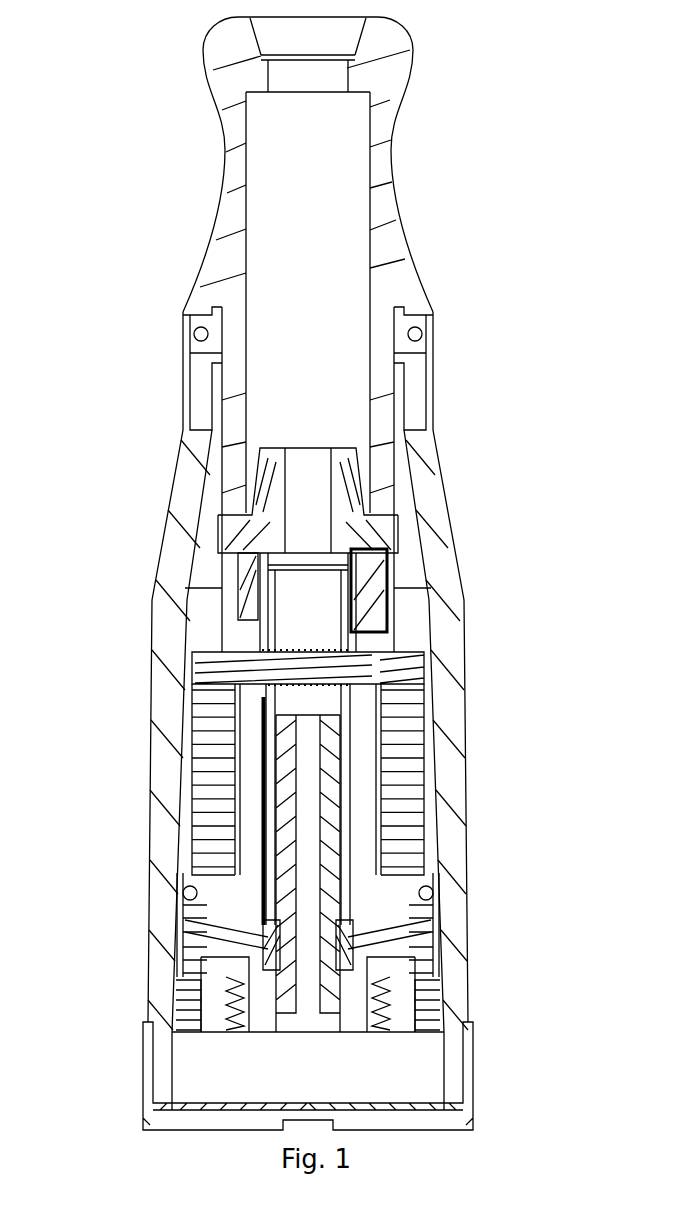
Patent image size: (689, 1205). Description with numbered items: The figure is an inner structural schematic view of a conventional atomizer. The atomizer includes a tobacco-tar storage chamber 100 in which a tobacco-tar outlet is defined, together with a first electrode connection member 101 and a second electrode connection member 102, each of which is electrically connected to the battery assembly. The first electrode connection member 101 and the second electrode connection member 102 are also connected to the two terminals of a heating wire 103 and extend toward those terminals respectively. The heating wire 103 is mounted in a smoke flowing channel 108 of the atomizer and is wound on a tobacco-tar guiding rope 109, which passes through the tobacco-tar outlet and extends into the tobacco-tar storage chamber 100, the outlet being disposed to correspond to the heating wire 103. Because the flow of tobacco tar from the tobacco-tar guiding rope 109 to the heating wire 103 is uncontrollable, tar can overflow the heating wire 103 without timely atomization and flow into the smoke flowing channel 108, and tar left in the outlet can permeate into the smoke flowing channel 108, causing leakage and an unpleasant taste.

The tobacco-tar storage chamber 100 is at (203, 639).
The first electrode connection member 101 is at (250, 800).
The second electrode connection member 102 is at (393, 611).
The heating wire 103 is at (350, 697).
The smoke flowing channel 108 is at (293, 703).
The tobacco-tar guiding rope 109 is at (213, 727).